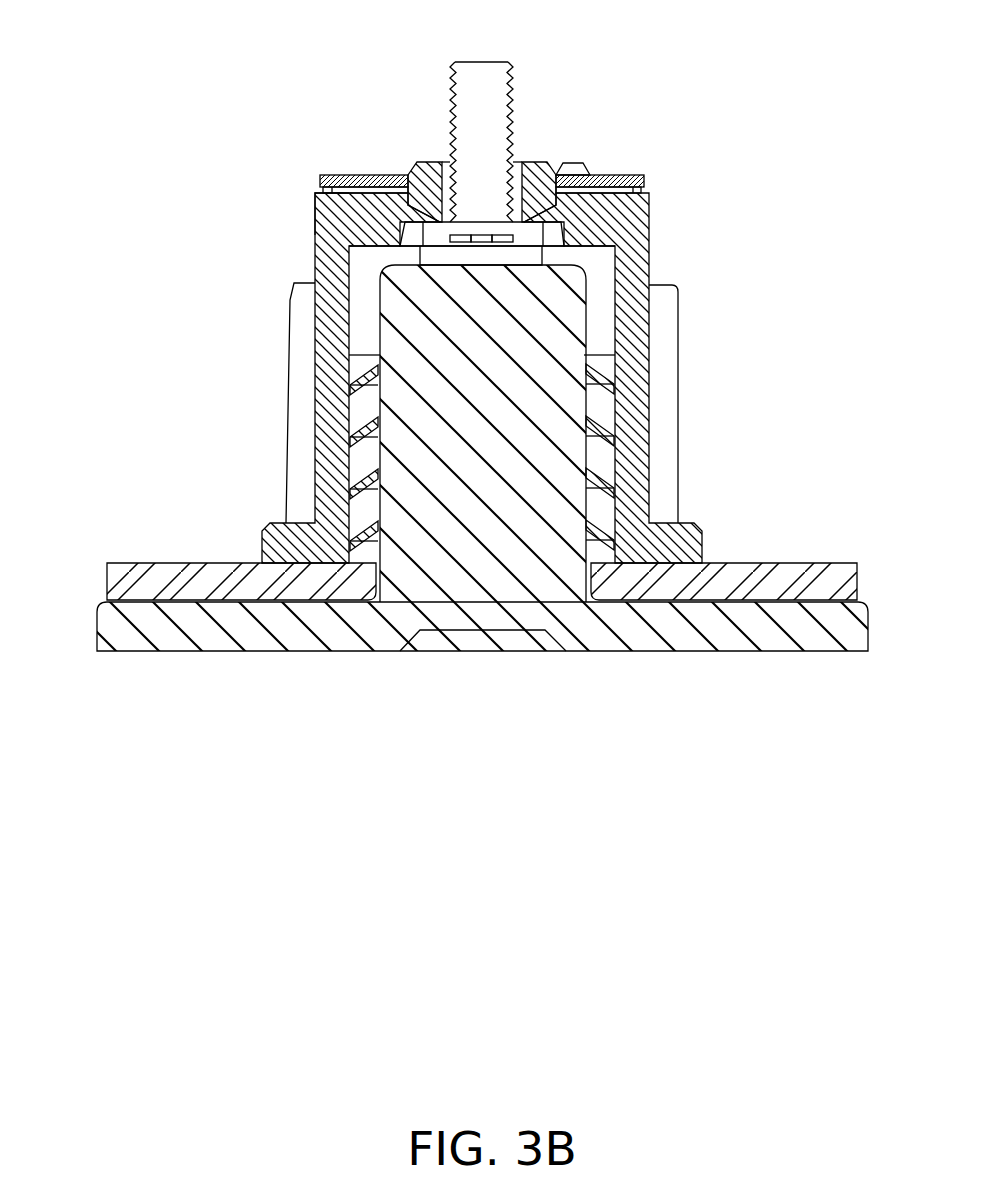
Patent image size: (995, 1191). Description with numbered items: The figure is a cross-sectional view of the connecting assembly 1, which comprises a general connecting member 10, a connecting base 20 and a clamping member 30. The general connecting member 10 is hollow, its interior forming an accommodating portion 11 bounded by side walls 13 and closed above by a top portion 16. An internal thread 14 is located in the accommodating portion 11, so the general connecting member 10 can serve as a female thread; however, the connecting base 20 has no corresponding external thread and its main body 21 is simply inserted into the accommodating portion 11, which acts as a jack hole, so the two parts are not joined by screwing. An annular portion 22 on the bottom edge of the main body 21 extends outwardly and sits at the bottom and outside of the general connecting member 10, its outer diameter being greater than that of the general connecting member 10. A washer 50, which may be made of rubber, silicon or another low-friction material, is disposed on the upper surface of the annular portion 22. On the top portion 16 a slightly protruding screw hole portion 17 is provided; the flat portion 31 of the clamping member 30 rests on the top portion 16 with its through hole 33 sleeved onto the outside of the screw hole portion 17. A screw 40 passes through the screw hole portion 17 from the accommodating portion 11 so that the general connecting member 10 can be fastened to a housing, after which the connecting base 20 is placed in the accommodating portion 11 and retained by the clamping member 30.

The connecting assembly 1 is at (290, 56).
The general connecting member 10 is at (330, 483).
The accommodating portion 11 is at (350, 264).
The side wall 13 is at (650, 230).
The internal thread 14 is at (350, 386).
The top portion 16 is at (318, 192).
The screw hole portion 17 is at (518, 166).
The connecting base 20 is at (475, 628).
The main body 21 is at (578, 452).
The annular portion 22 is at (246, 640).
The clamping member 30 is at (348, 176).
The flat portion 31 is at (360, 175).
The through hole 33 is at (406, 176).
The screw 40 is at (470, 78).
The washer 50 is at (120, 578).